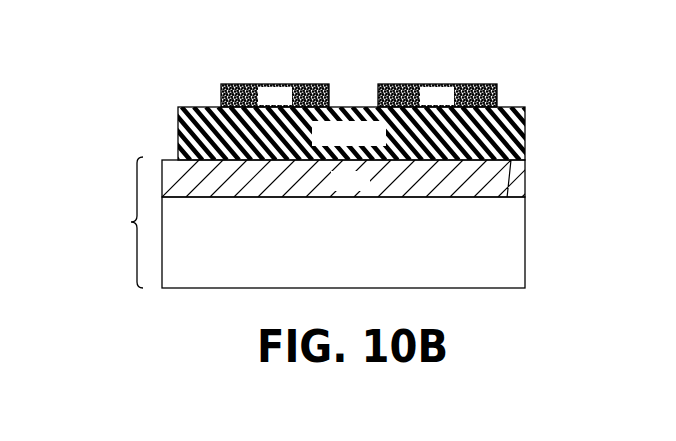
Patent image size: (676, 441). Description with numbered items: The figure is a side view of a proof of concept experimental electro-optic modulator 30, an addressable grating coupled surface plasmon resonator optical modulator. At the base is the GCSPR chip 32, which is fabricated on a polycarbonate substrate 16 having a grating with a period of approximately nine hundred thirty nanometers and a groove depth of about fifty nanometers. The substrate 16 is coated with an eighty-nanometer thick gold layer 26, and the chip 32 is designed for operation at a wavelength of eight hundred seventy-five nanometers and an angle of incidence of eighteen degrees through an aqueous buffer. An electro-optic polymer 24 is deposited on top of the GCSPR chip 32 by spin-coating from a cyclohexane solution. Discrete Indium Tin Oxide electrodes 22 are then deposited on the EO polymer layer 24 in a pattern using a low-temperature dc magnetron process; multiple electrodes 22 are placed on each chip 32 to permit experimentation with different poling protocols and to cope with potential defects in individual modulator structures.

The polycarbonate substrate 16 is at (500, 258).
The ITO electrodes 22 is at (221, 93).
The electro-optic polymer 24 is at (497, 135).
The gold layer 26 is at (507, 178).
The electro-optic modulator 30 is at (314, 228).
The GCSPR chip 32 is at (135, 223).